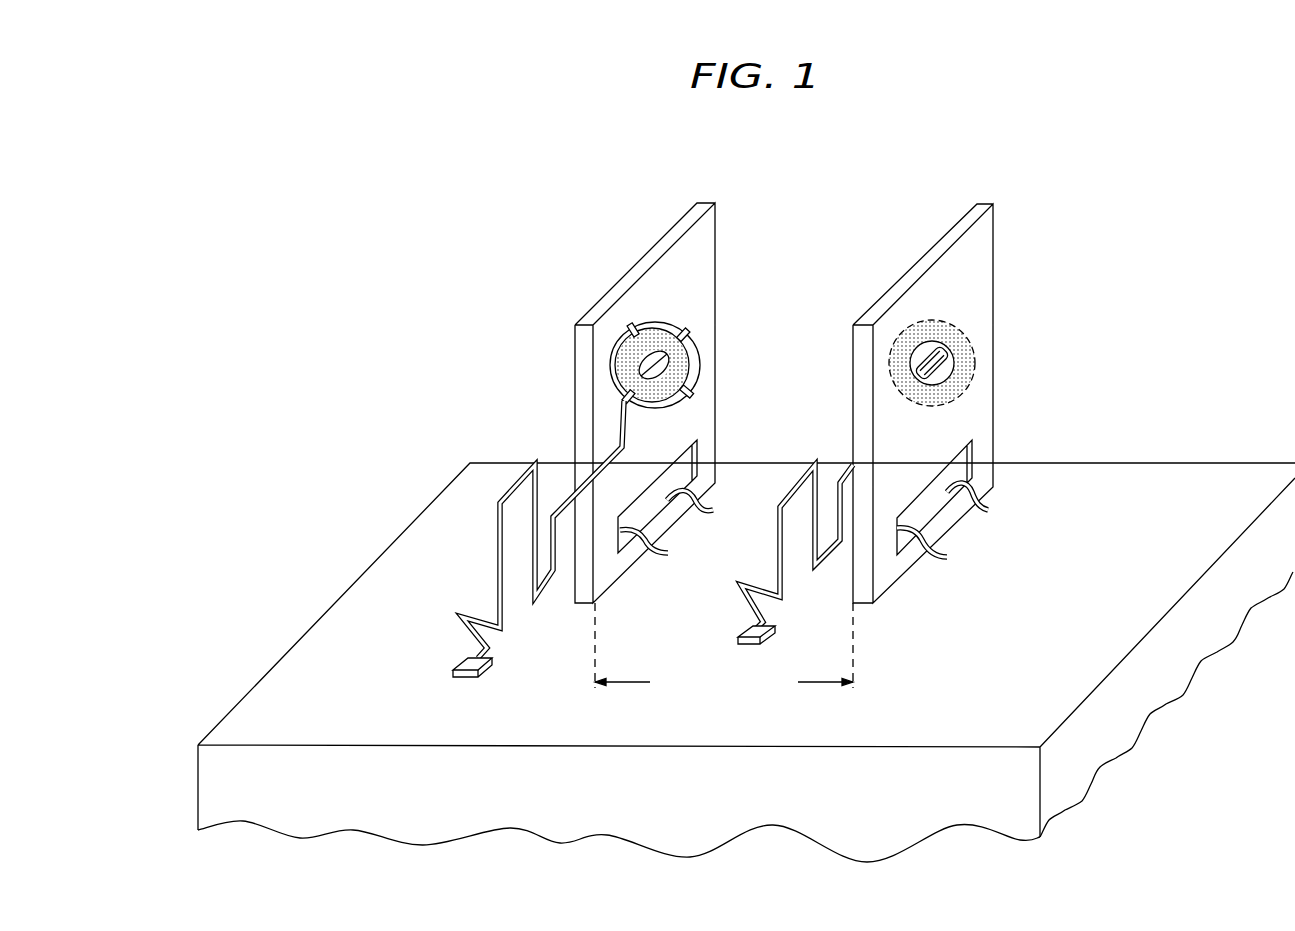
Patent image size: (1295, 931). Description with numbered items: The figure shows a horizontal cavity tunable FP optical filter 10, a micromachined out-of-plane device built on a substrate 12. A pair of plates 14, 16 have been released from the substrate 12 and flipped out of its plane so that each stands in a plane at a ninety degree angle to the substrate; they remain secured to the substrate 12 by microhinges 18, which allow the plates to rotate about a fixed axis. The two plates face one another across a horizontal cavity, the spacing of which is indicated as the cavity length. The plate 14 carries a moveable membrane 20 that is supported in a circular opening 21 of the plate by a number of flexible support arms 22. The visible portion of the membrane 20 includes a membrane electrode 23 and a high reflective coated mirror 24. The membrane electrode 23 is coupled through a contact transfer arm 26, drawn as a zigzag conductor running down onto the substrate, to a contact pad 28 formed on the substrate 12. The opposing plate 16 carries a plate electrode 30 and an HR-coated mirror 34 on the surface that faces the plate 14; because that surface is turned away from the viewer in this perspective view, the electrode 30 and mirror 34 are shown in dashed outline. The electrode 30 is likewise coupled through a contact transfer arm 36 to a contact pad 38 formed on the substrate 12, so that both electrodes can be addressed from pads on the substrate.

The horizontal cavity tunable FP optical filter 10 is at (450, 186).
The substrate 12 is at (912, 798).
The plate 14 is at (697, 250).
The plate 16 is at (968, 262).
The microhinges 18 is at (713, 510).
The moveable membrane 20 is at (653, 320).
The circular opening 21 is at (670, 322).
The flexible support arms 22 is at (633, 337).
The membrane electrode 23 is at (622, 396).
The high reflective coated mirror 24 is at (650, 365).
The contact transfer arm 26 is at (498, 575).
The contact pad 28 is at (468, 661).
The plate electrode 30 is at (955, 392).
The HR-coated mirror 34 is at (942, 365).
The contact transfer arm 36 is at (782, 587).
The contact pad 38 is at (773, 628).